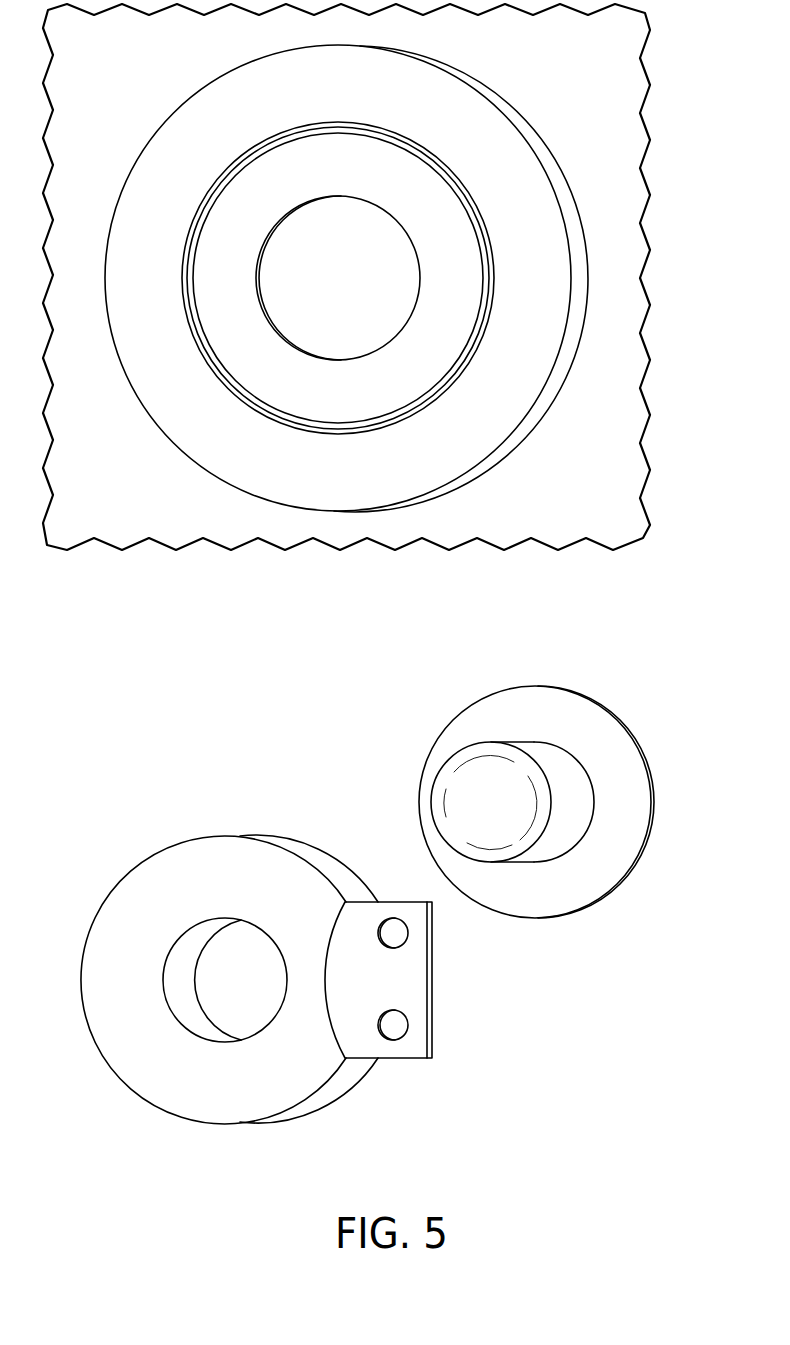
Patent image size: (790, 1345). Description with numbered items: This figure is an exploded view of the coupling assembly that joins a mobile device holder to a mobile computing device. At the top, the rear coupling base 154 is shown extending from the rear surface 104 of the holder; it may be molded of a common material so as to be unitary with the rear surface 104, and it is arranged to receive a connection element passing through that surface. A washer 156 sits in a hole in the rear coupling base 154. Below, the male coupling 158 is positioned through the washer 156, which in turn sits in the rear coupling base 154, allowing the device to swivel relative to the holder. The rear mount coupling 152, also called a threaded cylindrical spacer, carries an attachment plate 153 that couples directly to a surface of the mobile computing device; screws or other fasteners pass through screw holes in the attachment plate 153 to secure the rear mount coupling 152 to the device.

The rear surface 104 is at (624, 84).
The rear mount coupling 152 is at (152, 853).
The attachment plate 153 is at (420, 980).
The rear coupling base 154 is at (508, 102).
The washer 156 is at (484, 280).
The male coupling 158 is at (625, 724).